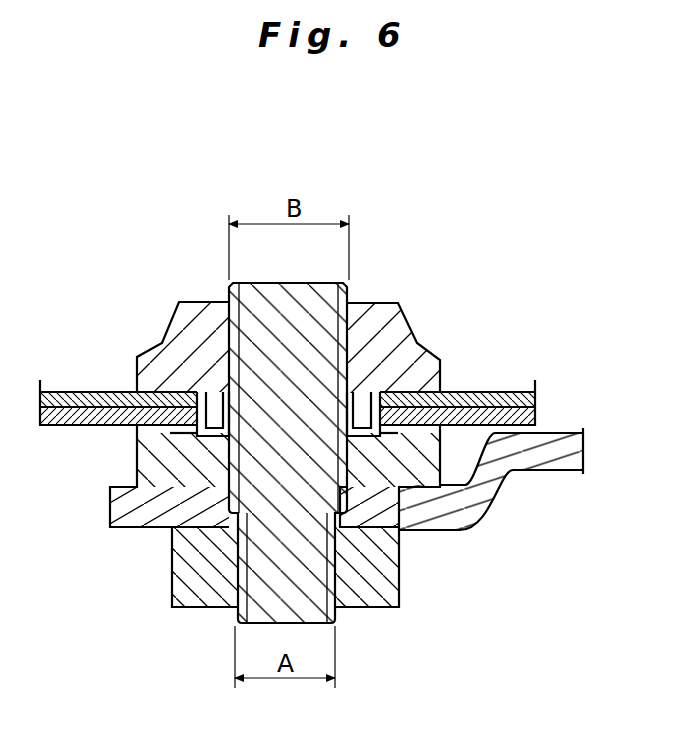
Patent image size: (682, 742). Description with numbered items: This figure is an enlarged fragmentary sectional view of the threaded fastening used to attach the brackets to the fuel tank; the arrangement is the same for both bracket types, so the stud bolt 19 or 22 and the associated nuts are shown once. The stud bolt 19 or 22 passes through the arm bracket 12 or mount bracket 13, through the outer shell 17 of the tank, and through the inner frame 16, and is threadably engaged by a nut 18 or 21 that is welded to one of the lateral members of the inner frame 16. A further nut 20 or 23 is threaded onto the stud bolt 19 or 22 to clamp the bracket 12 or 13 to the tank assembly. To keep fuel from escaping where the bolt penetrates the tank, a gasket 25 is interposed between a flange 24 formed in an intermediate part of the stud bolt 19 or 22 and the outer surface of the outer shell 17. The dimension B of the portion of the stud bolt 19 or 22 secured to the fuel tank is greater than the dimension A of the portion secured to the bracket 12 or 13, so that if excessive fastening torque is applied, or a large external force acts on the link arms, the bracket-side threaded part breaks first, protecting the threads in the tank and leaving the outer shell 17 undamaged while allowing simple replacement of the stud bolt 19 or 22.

The arm bracket 12 is at (491, 501).
The mount bracket 13 is at (452, 528).
The inner frame 16 is at (498, 393).
The outer shell 17 is at (525, 421).
The nut 18 is at (346, 347).
The stud bolt 19 is at (358, 432).
The nut 20 is at (352, 573).
The nut 21 is at (427, 348).
The stud bolt 22 is at (316, 281).
The nut 23 is at (383, 605).
The flange 24 is at (147, 466).
The gasket 25 is at (178, 437).